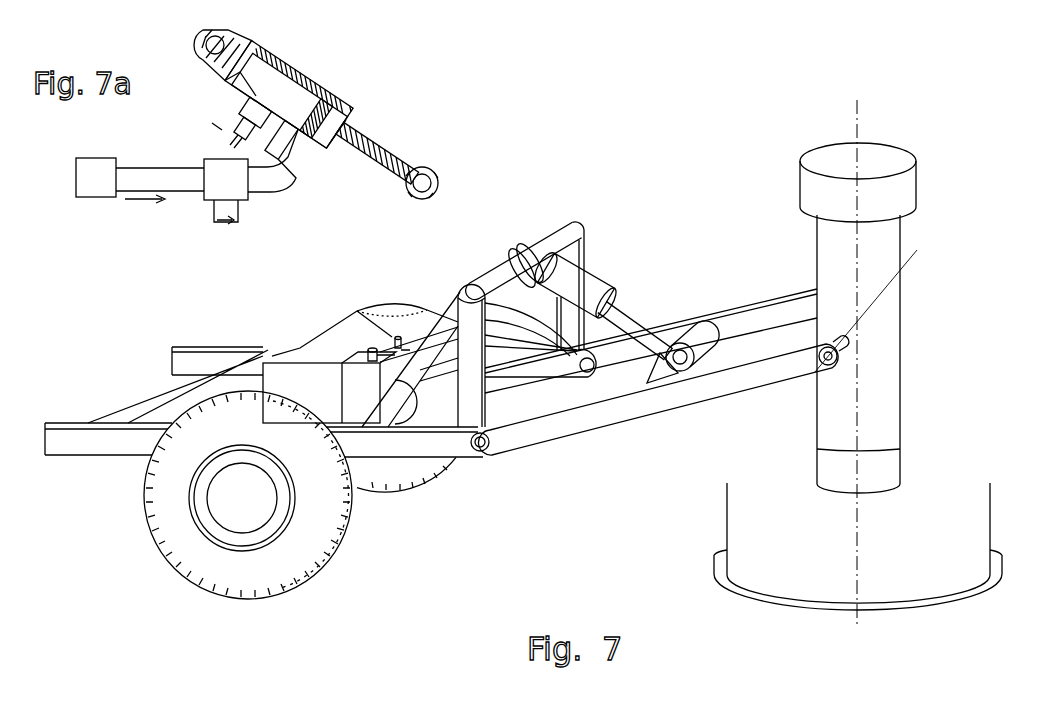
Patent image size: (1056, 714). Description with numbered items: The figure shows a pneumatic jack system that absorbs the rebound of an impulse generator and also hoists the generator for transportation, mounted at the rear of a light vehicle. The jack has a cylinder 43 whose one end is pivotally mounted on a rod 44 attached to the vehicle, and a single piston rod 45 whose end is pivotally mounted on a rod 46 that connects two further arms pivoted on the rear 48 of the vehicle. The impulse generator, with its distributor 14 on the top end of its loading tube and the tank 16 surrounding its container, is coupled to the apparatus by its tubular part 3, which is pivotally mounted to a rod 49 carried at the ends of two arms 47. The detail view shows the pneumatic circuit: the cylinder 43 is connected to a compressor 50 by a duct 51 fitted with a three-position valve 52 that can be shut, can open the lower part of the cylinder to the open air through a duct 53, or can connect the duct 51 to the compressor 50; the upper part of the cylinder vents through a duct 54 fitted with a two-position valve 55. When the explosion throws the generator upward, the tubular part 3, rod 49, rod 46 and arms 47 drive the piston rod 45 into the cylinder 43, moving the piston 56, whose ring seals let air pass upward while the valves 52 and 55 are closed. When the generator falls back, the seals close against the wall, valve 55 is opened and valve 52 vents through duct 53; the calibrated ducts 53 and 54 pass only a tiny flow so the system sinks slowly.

In FIG. 7, the tubular part 3 is at (880, 405).
In FIG. 7, the distributor 14 is at (905, 178).
In FIG. 7, the tank 16 is at (970, 535).
In FIG. 7A, the cylinder 43 is at (277, 62).
In FIG. 7, the cylinder 43 is at (580, 282).
In FIG. 7, the rod 44 is at (555, 243).
In FIG. 7A, the piston rod 45 is at (377, 147).
In FIG. 7, the piston rod 45 is at (613, 313).
In FIG. 7, the rod 46 is at (702, 337).
In FIG. 7, the arms 47 is at (787, 317).
In FIG. 7, the rear of the vehicle 48 is at (452, 448).
In FIG. 7, the rod 49 is at (848, 350).
In FIG. 7A, the compressor 50 is at (93, 167).
In FIG. 7, the compressor 50 is at (372, 325).
In FIG. 7A, the duct 51 is at (180, 180).
In FIG. 7, the duct 51 is at (517, 353).
In FIG. 7A, the valve 52 is at (240, 192).
In FIG. 7, the valve 52 is at (360, 377).
In FIG. 7A, the duct 53 is at (228, 217).
In FIG. 7, the duct 53 is at (371, 352).
In FIG. 7A, the duct 54 is at (233, 97).
In FIG. 7, the duct 54 is at (516, 320).
In FIG. 7A, the valve 55 is at (230, 112).
In FIG. 7, the valve 55 is at (410, 343).
In FIG. 7A, the piston 56 is at (300, 88).